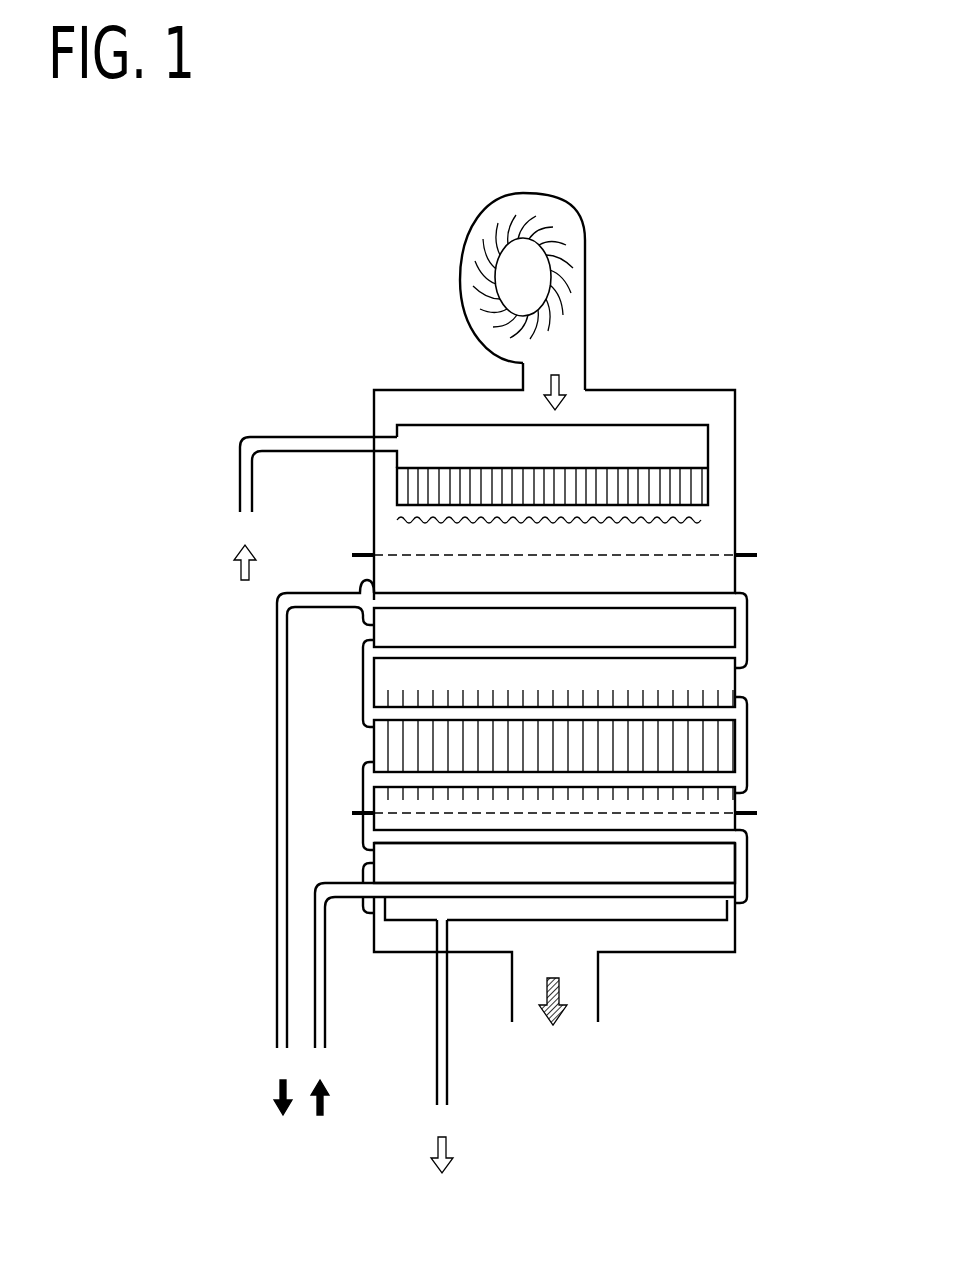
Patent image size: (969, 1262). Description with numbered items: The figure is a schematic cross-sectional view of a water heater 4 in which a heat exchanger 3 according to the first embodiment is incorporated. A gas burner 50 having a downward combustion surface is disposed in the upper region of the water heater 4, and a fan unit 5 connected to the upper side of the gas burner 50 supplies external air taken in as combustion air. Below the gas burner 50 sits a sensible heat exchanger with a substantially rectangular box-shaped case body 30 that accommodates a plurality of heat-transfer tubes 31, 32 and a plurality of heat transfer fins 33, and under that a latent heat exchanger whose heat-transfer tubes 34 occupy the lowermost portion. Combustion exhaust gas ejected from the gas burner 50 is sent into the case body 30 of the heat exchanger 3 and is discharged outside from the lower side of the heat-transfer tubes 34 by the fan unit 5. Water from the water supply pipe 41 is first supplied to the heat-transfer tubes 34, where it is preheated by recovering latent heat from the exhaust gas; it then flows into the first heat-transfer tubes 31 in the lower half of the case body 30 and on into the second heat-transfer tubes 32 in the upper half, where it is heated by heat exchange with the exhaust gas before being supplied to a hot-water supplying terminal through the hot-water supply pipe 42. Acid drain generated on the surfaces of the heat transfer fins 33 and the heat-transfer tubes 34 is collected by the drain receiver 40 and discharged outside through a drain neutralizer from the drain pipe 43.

The heat exchanger 3 is at (762, 716).
The water heater 4 is at (331, 351).
The fan unit 5 is at (580, 238).
The case body 30 is at (748, 806).
The first heat-transfer tubes 31 is at (430, 713).
The second heat-transfer tubes 32 is at (678, 600).
The heat transfer fins 33 is at (708, 698).
The heat-transfer tubes 34 is at (643, 837).
The drain receiver 40 is at (707, 920).
The water supply pipe 41 is at (315, 956).
The hot-water supply pipe 42 is at (277, 855).
The drain pipe 43 is at (437, 1000).
The gas burner 50 is at (718, 467).